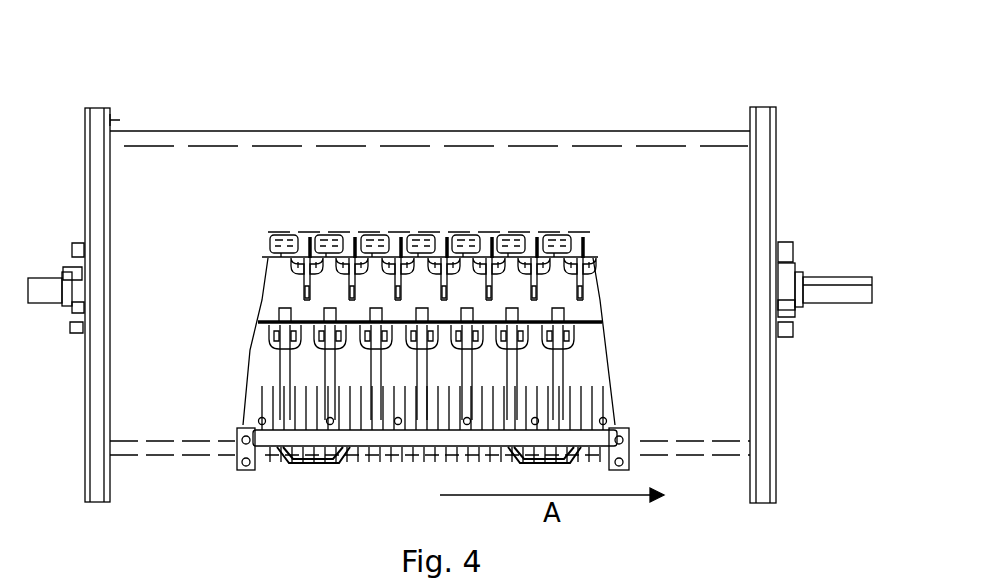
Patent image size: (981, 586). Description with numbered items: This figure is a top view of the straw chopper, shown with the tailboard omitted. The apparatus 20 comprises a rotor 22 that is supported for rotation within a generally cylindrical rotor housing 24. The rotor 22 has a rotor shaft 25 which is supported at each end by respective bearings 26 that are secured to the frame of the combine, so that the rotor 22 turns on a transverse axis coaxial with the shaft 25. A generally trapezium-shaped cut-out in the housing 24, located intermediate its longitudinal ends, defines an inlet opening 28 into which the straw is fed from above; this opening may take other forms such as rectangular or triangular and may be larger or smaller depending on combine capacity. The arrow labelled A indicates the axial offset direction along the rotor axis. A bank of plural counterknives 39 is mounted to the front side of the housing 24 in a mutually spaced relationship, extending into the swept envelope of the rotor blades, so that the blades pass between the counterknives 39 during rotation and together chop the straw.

The apparatus 20 is at (155, 71).
The rotor 22 is at (515, 300).
The rotor housing 24 is at (688, 190).
The rotor shaft 25 is at (835, 277).
The bearings 26 is at (72, 265).
The inlet opening 28 is at (250, 375).
The counterknives 39 is at (422, 455).